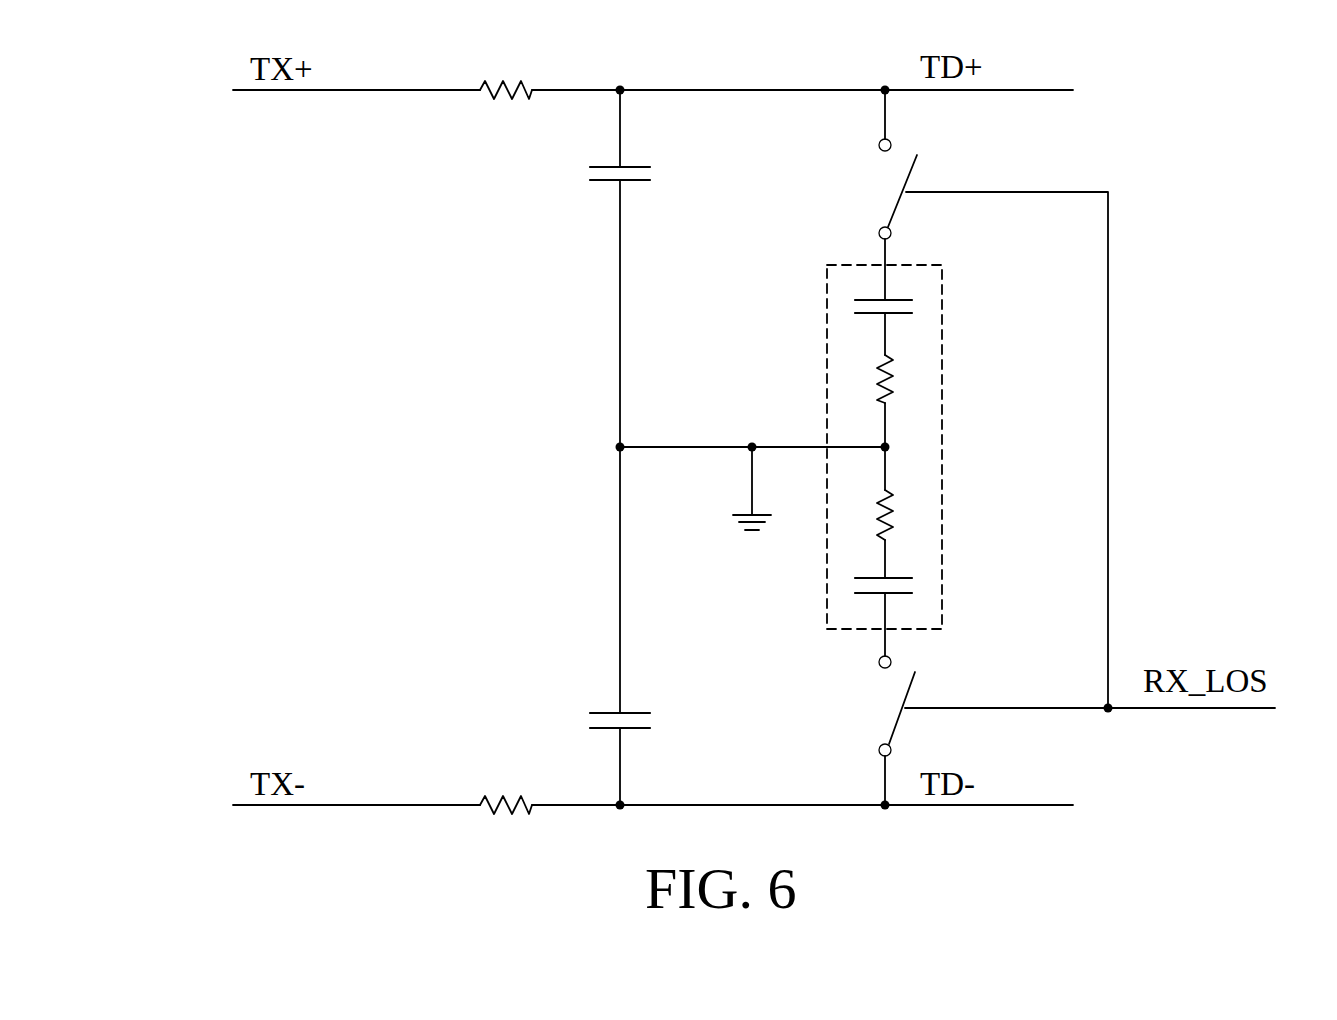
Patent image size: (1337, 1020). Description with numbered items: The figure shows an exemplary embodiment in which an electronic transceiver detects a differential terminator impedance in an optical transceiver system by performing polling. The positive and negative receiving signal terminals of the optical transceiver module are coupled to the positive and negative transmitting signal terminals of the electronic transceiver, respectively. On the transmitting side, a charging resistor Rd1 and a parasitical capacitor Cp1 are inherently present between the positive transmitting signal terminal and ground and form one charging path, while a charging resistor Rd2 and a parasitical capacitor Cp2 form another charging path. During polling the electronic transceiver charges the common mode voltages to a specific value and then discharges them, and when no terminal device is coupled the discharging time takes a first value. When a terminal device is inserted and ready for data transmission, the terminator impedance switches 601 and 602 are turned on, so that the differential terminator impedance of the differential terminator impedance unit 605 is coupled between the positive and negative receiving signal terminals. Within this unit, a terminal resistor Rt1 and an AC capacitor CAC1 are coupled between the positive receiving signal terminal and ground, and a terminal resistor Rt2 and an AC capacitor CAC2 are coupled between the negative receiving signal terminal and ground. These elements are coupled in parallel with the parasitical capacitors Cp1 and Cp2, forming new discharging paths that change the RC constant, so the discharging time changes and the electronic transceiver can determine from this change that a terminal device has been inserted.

The terminator impedance switch 601 is at (897, 210).
The terminator impedance switch 602 is at (897, 729).
The differential terminator impedance unit 605 is at (945, 266).
The charging resistor Rd1 is at (503, 105).
The charging resistor Rd2 is at (511, 790).
The parasitical capacitor Cp1 is at (656, 171).
The parasitical capacitor Cp2 is at (656, 718).
The AC capacitor CAC1 is at (918, 306).
The AC capacitor CAC2 is at (918, 584).
The terminal resistor Rt1 is at (895, 377).
The terminal resistor Rt2 is at (895, 506).